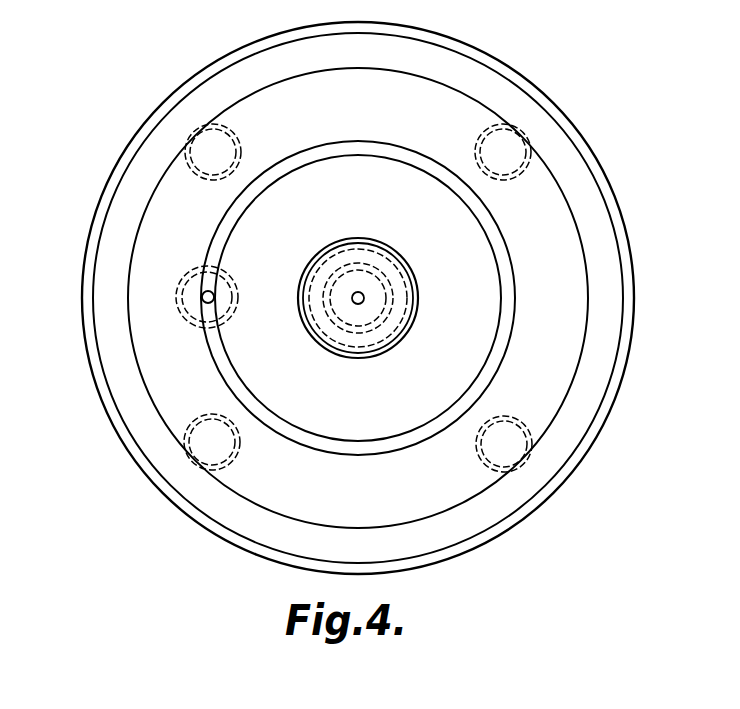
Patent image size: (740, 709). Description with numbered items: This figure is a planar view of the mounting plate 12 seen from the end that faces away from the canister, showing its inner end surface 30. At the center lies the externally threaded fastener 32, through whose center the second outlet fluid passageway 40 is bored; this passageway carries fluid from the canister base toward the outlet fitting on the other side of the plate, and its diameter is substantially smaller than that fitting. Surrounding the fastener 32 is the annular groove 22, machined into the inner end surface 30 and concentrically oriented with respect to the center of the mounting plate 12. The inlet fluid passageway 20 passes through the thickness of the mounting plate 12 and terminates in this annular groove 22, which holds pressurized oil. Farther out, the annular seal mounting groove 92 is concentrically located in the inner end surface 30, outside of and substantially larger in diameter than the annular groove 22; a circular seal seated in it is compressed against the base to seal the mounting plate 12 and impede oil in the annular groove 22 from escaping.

The mounting plate 12 is at (616, 416).
The inlet fluid passageway 20 is at (203, 293).
The annular groove 22 is at (405, 155).
The inner end surface 30 is at (252, 108).
The externally threaded fastener 32 is at (415, 277).
The second outlet fluid passageway 40 is at (364, 298).
The annular seal mounting groove 92 is at (568, 158).